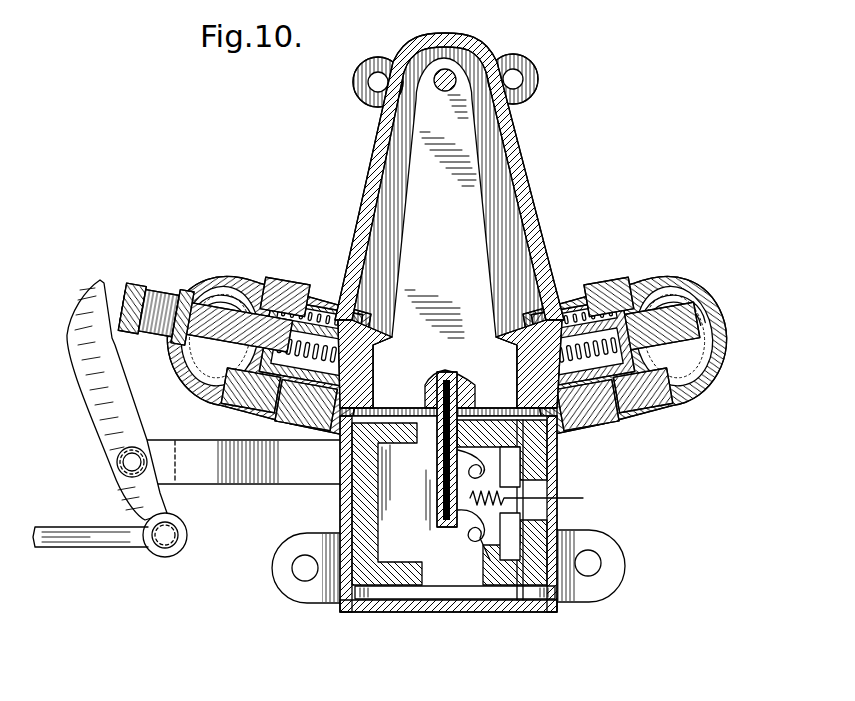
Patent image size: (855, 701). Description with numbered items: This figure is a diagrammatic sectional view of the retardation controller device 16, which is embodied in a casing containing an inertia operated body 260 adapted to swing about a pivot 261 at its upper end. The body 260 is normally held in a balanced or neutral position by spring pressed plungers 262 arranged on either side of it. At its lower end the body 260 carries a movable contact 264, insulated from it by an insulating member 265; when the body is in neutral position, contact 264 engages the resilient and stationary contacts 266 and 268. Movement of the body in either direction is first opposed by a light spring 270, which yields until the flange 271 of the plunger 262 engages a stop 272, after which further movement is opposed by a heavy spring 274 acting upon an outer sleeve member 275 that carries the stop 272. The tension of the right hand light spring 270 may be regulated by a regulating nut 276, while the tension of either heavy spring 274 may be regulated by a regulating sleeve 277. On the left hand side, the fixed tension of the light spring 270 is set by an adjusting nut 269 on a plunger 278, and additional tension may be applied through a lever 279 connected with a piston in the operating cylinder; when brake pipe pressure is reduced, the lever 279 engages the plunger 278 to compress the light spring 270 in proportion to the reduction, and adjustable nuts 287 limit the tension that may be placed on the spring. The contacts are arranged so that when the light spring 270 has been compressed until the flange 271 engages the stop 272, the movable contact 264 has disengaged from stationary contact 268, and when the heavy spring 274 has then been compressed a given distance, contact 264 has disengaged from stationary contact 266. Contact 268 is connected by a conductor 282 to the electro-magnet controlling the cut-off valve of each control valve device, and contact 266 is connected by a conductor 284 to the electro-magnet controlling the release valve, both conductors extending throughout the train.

The retardation controller device 16 is at (378, 135).
The inertia operated body 260 is at (410, 236).
The pivot 261 is at (456, 72).
The spring pressed plunger 262 is at (510, 377).
The contact 264 is at (441, 512).
The insulating member 265 is at (437, 450).
The stationary contact 266 is at (468, 483).
The stationary contact 268 is at (469, 514).
The adjusting nut 269 is at (197, 302).
The light spring 270 is at (222, 380).
The flange 271 is at (287, 313).
The stop 272 is at (232, 327).
The heavy spring 274 is at (288, 395).
The outer sleeve member 275 is at (262, 388).
The regulating nut 276 is at (702, 318).
The regulating sleeve 277 is at (272, 297).
The plunger 278 is at (226, 322).
The lever 279 is at (93, 403).
The conductor 282 is at (525, 516).
The conductor 284 is at (525, 486).
The adjustable nut 287 is at (133, 265).